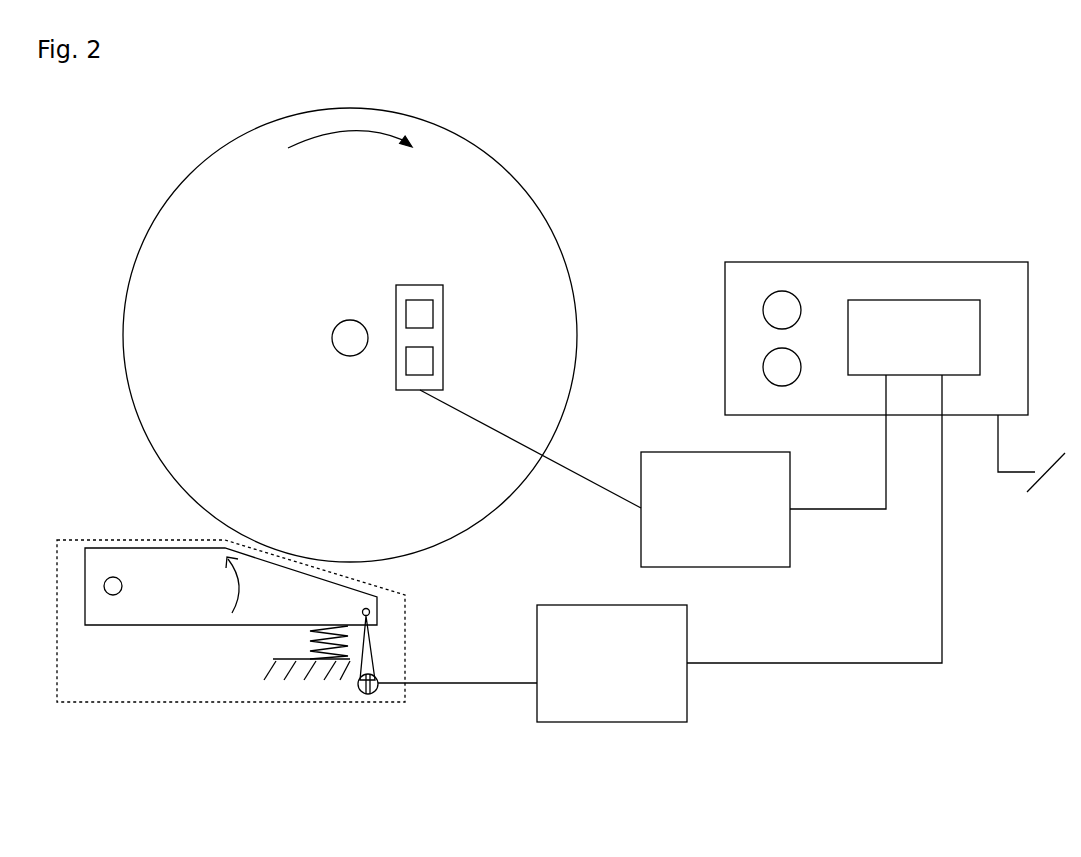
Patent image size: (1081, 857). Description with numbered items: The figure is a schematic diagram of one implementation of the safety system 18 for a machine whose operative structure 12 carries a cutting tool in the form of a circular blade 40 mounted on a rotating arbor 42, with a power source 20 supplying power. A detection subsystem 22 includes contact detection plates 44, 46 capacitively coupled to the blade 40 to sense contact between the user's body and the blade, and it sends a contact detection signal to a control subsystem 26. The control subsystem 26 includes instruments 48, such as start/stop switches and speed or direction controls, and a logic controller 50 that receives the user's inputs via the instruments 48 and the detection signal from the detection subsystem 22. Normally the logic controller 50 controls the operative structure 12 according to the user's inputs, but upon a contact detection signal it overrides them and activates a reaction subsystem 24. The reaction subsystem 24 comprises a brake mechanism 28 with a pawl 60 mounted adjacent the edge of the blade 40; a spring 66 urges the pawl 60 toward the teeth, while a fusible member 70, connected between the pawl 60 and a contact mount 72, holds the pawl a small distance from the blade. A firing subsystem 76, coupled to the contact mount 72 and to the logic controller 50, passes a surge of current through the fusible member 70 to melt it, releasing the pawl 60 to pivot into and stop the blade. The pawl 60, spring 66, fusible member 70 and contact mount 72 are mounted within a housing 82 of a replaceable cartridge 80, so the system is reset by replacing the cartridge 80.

The operative structure 12 is at (568, 118).
The safety system 18 is at (868, 154).
The power source 20 is at (1035, 465).
The detection subsystem 22 is at (770, 496).
The reaction subsystem 24 is at (654, 768).
The control subsystem 26 is at (917, 262).
The brake mechanism 28 is at (128, 656).
The circular blade 40 is at (262, 219).
The arbor 42 is at (340, 343).
The contact detection plate 44 is at (430, 310).
The contact detection plate 46 is at (430, 357).
The instruments 48 is at (773, 310).
The logic controller 50 is at (957, 342).
The pawl 60 is at (137, 558).
The spring 66 is at (287, 645).
The fusible member 70 is at (376, 660).
The contact mount 72 is at (360, 694).
The firing subsystem 76 is at (665, 649).
The replaceable cartridge 80 is at (86, 743).
The housing 82 is at (150, 702).